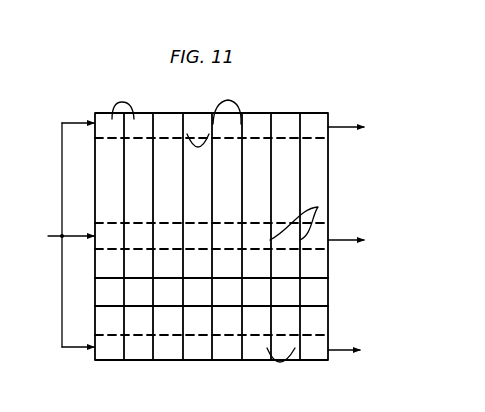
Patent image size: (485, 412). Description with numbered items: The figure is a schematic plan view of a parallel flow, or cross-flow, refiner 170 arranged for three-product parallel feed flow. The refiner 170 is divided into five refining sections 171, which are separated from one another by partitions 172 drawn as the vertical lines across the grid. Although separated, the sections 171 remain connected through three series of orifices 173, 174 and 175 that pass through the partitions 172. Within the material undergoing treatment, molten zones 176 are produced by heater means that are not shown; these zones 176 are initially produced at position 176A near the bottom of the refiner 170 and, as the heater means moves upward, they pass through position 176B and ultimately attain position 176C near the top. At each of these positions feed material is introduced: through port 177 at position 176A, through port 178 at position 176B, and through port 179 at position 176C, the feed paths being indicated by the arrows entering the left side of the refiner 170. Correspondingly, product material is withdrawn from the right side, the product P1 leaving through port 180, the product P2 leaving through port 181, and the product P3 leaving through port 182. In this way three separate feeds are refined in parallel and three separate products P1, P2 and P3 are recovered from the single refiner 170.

The refiner 170 is at (330, 178).
The refining sections 171 is at (122, 102).
The partitions 172 is at (198, 148).
The orifices 173 is at (228, 100).
The orifices 174 is at (318, 207).
The orifices 175 is at (278, 362).
The molten zones 176 is at (330, 290).
The position 176A is at (330, 340).
The position 176B is at (328, 250).
The position 176C is at (328, 139).
The port 177 is at (90, 348).
The port 178 is at (92, 242).
The port 179 is at (92, 128).
The port 180 is at (330, 353).
The port 181 is at (330, 238).
The port 182 is at (330, 126).
The product material P1 is at (370, 352).
The product material P2 is at (375, 242).
The product material P3 is at (375, 129).